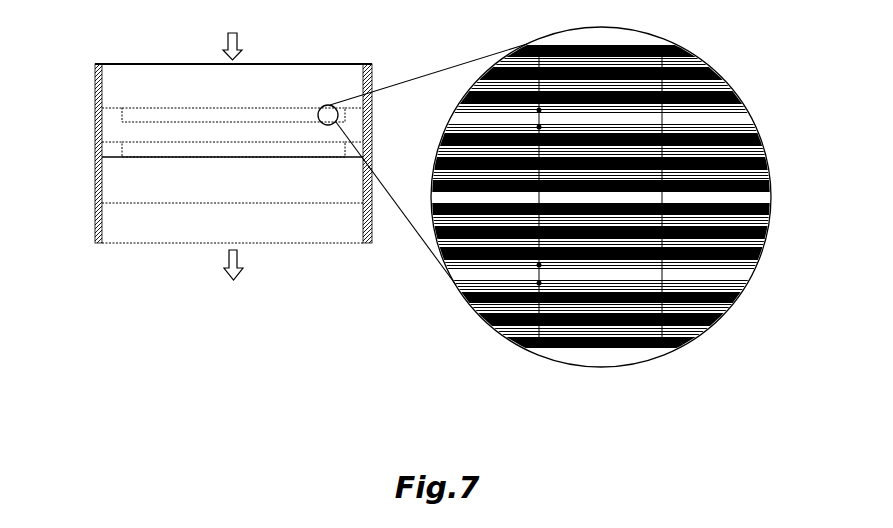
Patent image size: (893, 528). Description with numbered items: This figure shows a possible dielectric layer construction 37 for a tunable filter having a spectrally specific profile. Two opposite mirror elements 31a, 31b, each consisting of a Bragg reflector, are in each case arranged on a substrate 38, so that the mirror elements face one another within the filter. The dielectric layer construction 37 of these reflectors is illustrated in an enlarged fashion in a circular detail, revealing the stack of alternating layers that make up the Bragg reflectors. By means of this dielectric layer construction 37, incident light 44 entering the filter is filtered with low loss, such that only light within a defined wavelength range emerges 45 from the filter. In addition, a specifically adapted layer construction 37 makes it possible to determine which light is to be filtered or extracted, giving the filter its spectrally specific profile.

The mirror element 31a is at (202, 101).
The mirror element 31b is at (202, 142).
The dielectric layer construction 37 is at (736, 93).
The substrate 38 is at (177, 95).
The incident light 44 is at (226, 46).
The emerging light 45 is at (228, 263).